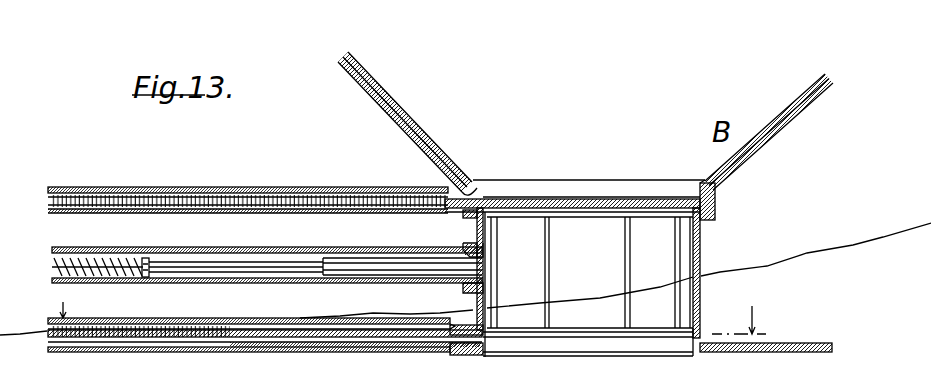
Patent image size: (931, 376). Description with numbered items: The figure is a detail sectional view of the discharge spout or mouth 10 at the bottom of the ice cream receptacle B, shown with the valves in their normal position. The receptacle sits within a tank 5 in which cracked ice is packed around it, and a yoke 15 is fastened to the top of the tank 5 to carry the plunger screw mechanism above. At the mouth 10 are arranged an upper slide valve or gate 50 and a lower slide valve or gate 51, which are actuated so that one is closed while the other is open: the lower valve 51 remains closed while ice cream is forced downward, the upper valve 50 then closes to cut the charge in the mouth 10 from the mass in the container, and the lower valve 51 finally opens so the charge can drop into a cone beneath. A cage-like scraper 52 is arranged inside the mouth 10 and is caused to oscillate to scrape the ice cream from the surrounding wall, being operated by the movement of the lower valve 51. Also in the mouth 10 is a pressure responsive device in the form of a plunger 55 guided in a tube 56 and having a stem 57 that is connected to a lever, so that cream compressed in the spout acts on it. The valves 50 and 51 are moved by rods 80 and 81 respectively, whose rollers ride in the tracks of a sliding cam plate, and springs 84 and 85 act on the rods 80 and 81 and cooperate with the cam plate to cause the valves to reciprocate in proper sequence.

The tank 5 is at (757, 348).
The discharge spout or mouth 10 is at (707, 275).
The yoke 15 is at (597, 318).
The upper slide valve or gate 50 is at (627, 203).
The lower slide valve or gate 51 is at (432, 336).
The cage-like scraper 52 is at (549, 278).
The plunger 55 is at (416, 265).
The tube 56 is at (305, 253).
The stem 57 is at (272, 268).
The valve rod 80 is at (245, 202).
The valve rod 81 is at (177, 331).
The spring 84 is at (185, 198).
The spring 85 is at (207, 340).